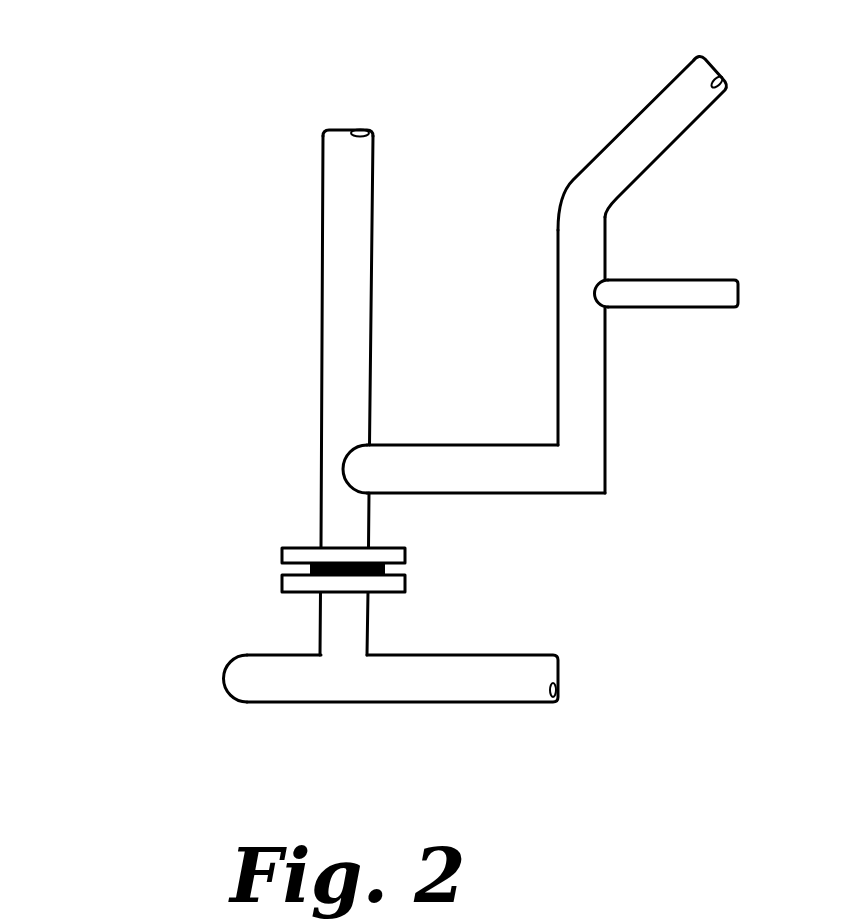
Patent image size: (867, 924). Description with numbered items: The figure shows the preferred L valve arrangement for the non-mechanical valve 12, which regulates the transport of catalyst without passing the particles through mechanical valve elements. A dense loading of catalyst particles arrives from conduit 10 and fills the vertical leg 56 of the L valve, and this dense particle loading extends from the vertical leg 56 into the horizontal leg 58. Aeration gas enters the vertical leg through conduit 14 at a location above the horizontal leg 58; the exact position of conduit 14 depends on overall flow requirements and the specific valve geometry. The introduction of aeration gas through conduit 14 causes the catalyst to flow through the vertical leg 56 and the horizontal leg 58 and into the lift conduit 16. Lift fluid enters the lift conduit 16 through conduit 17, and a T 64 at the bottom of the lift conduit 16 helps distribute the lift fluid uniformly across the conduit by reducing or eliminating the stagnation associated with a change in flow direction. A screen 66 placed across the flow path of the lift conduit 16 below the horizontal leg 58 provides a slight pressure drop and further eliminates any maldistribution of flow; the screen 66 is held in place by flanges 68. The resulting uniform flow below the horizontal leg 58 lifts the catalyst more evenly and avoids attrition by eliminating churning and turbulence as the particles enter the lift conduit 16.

The conduit 10 is at (637, 112).
The non-mechanical valve 12 is at (193, 689).
The conduit 14 is at (688, 278).
The lift conduit 16 is at (322, 200).
The conduit 17 is at (399, 681).
The vertical leg 56 is at (605, 397).
The horizontal leg 58 is at (510, 495).
The T 64 is at (282, 703).
The screen 66 is at (388, 569).
The flanges 68 is at (285, 547).